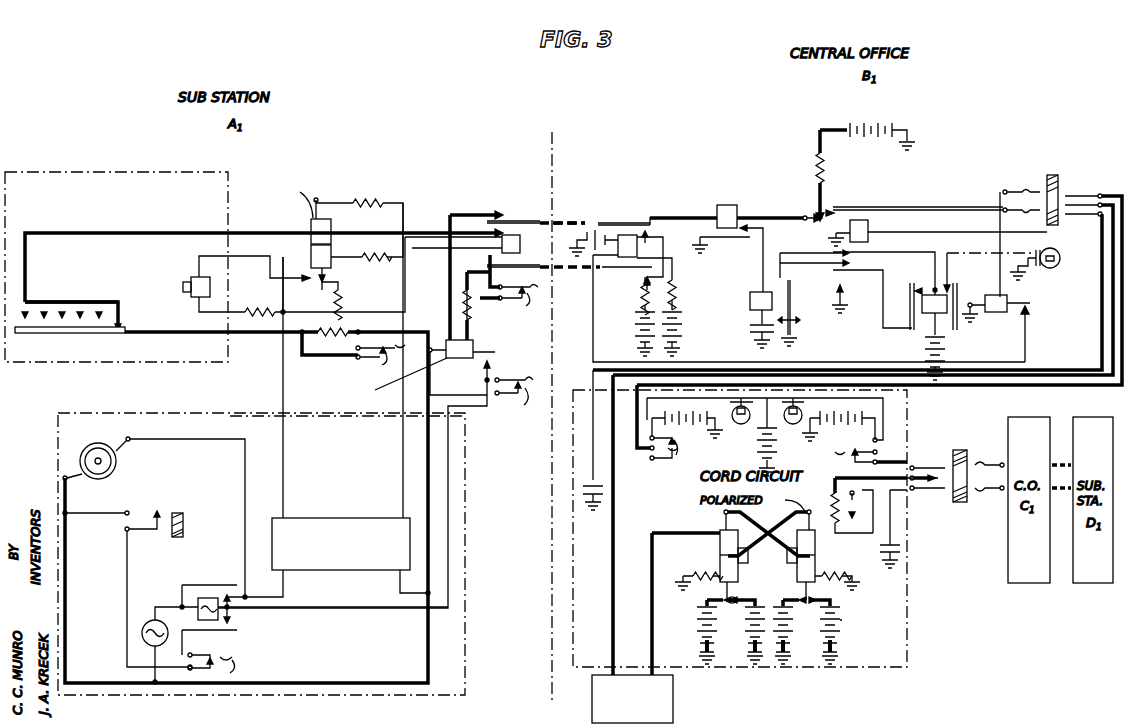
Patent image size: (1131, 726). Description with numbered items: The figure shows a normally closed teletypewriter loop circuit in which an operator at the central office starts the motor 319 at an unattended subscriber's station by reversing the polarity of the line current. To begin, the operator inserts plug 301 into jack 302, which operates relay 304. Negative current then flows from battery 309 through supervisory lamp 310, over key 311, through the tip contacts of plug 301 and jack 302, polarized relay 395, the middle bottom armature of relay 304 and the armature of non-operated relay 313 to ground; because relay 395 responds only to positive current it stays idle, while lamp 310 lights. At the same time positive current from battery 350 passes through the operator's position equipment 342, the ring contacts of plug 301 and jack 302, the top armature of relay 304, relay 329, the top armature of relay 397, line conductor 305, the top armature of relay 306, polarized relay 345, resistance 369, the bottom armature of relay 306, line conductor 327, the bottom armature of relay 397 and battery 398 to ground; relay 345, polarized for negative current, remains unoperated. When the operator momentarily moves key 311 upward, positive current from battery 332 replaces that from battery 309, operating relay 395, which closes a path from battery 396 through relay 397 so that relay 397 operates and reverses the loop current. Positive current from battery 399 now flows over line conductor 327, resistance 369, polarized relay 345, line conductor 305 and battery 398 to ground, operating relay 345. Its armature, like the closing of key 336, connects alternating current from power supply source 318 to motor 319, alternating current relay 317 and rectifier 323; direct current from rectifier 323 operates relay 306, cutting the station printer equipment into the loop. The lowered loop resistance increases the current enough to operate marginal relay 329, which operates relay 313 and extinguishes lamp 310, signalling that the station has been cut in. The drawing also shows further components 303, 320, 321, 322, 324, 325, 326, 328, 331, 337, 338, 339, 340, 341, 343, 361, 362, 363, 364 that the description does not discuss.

The plug 301 is at (1092, 194).
The jack 302 is at (1042, 186).
The condenser 303 is at (604, 491).
The relay 304 is at (861, 220).
The line conductor 305 is at (578, 222).
The relay 306 is at (512, 235).
The battery 309 is at (776, 441).
The supervisory lamp 310 is at (755, 410).
The key 311 is at (661, 435).
The relay 313 is at (750, 298).
The alternating current relay 317 is at (213, 598).
The power supply source 318 is at (157, 620).
The motor 319 is at (120, 448).
The contacts 320 is at (172, 503).
The switch contacts 321 is at (231, 663).
The resistance 322 is at (184, 527).
The rectifier 323 is at (392, 572).
The telegraph key 324 is at (118, 301).
The contacts 325 is at (375, 360).
The contacts 326 is at (518, 303).
The line conductor 327 is at (578, 269).
The polarized relay 328 is at (310, 222).
The marginal relay 329 is at (731, 205).
The condenser 331 is at (747, 334).
The battery 332 is at (698, 428).
The key 336 is at (522, 403).
The battery and resistance 337 is at (880, 141).
The relay 338 is at (921, 305).
The battery 339 is at (922, 343).
The lamp 340 is at (1048, 268).
The sounder 341 is at (190, 278).
The operator's position equipment 342 is at (674, 711).
The resistance 343 is at (330, 340).
The polarized relay 345 is at (466, 359).
The battery 350 is at (843, 629).
The polarized relay 361 is at (720, 546).
The battery 362 is at (742, 630).
The polarized relay 363 is at (815, 553).
The battery 364 is at (800, 618).
The resistance 369 is at (460, 298).
The polarized relay 395 is at (1003, 313).
The battery 396 is at (597, 229).
The relay 397 is at (635, 260).
The battery 398 is at (638, 322).
The battery 399 is at (686, 320).